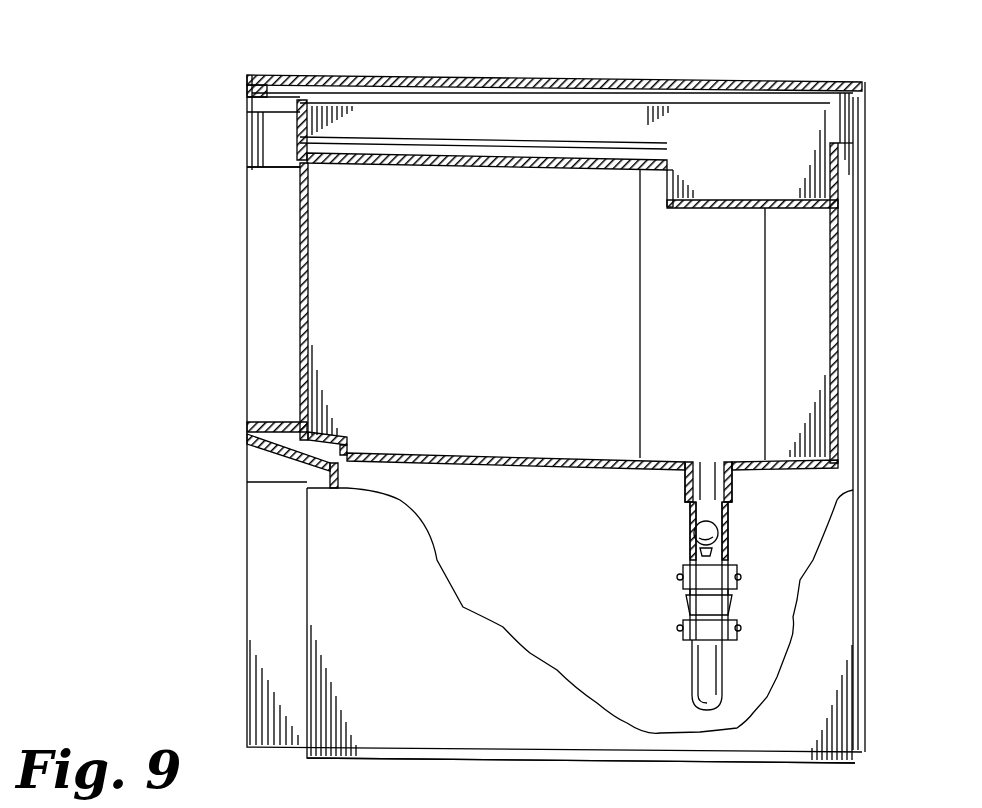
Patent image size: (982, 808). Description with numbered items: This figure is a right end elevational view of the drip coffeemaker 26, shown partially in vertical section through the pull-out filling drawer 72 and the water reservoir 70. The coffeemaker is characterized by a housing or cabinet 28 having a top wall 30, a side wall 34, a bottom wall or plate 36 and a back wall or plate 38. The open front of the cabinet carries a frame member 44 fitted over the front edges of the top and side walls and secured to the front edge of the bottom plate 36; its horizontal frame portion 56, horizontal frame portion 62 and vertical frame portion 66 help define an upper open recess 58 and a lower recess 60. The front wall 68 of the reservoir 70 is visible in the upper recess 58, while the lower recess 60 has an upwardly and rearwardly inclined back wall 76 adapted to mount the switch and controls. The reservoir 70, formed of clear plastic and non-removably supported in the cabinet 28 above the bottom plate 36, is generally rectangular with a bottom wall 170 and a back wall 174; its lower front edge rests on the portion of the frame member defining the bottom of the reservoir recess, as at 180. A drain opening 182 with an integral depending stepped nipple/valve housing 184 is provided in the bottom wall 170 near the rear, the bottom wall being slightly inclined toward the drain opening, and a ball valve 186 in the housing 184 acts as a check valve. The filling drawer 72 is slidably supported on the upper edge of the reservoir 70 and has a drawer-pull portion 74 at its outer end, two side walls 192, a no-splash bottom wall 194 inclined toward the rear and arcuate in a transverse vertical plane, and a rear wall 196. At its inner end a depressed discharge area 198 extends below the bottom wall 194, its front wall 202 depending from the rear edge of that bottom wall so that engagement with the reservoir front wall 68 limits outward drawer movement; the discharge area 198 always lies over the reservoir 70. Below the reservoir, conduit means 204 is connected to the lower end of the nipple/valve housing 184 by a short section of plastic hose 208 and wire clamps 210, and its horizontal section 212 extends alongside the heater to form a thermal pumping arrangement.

The drip coffeemaker 26 is at (224, 242).
The cabinet 28 is at (243, 622).
The top wall 30 is at (628, 80).
The side wall 34 is at (412, 657).
The bottom wall or plate 36 is at (476, 762).
The back wall or plate 38 is at (866, 413).
The frame member 44 is at (246, 434).
The horizontal frame portion 56 is at (250, 133).
The upper open recess 58 is at (283, 424).
The lower recess 60 is at (293, 457).
The horizontal frame portion 62 is at (293, 452).
The vertical frame portion 66 is at (272, 673).
The front wall of water reservoir 68 is at (300, 293).
The water reservoir 70 is at (298, 332).
The pull-out filling drawer 72 is at (693, 105).
The drawer-pull portion 74 is at (250, 153).
The back wall of lower recess 76 is at (335, 462).
The bottom wall of reservoir 170 is at (533, 465).
The back wall of reservoir 174 is at (830, 355).
The reservoir support portion 180 is at (294, 437).
The drain opening 182 is at (707, 460).
The nipple/valve housing 184 is at (683, 490).
The ball valve 186 is at (697, 528).
The side walls of filling drawer 192 is at (465, 100).
The no-splash bottom wall 194 is at (532, 122).
The rear wall of filling drawer 196 is at (842, 120).
The depressed discharge area 198 is at (663, 195).
The front wall of discharge area 202 is at (667, 187).
The conduit means 204 is at (689, 668).
The plastic hose section 208 is at (682, 598).
The wire clamps 210 is at (680, 575).
The horizontal conduit section 212 is at (727, 705).